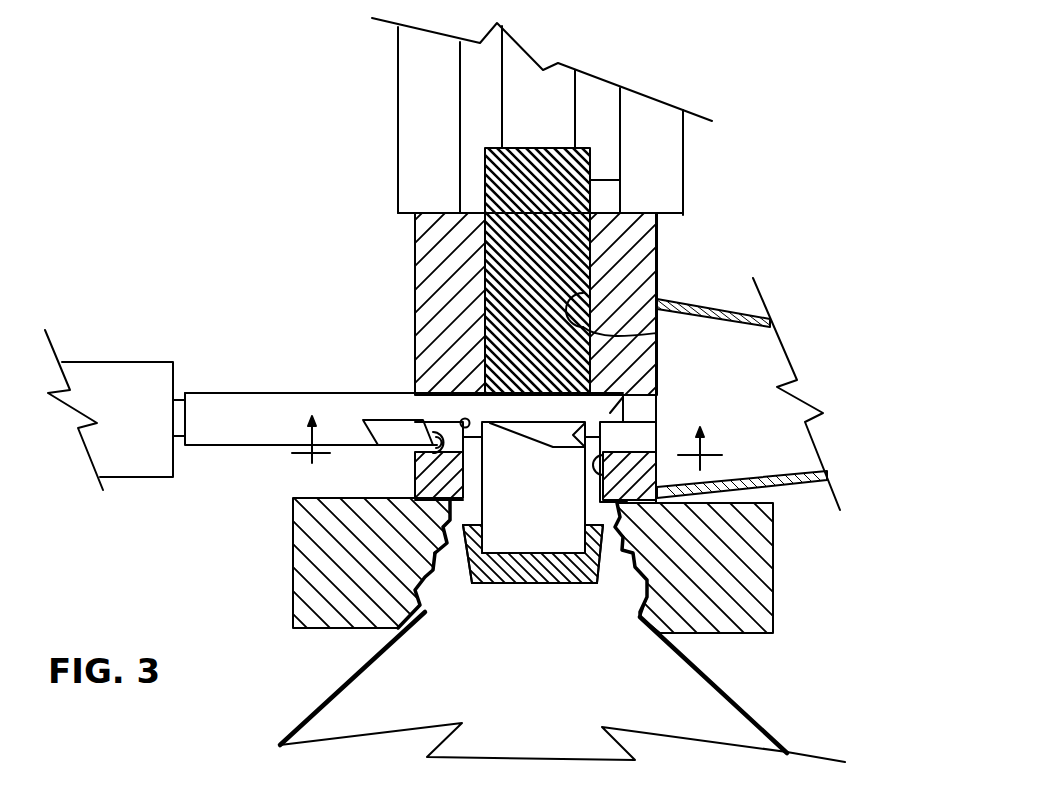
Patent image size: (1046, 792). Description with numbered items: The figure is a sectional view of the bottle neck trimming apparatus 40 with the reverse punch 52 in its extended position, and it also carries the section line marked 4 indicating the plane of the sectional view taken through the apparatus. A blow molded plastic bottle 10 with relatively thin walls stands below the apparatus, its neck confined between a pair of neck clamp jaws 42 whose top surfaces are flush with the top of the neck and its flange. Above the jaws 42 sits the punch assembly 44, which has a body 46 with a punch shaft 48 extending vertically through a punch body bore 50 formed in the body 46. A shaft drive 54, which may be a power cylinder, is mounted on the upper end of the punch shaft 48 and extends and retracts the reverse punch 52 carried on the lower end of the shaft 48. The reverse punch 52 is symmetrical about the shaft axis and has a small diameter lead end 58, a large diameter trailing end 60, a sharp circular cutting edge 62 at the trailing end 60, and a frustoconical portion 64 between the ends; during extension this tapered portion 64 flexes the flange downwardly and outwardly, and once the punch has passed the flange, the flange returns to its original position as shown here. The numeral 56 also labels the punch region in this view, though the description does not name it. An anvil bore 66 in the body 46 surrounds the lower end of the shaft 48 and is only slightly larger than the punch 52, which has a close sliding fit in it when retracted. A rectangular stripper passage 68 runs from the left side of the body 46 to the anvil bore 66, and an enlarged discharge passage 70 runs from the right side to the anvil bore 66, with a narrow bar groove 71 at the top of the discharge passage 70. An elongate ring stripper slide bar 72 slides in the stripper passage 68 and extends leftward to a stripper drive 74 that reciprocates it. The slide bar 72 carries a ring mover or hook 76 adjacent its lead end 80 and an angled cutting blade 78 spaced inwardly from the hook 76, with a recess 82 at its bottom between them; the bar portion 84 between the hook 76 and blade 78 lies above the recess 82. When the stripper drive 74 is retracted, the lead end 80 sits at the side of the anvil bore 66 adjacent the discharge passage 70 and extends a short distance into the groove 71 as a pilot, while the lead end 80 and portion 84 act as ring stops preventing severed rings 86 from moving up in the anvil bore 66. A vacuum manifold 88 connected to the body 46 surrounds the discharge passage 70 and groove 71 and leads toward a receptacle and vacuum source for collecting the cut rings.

The bottle 10 is at (297, 728).
The neck trimming apparatus 40 is at (181, 175).
The neck clamp jaws 42 is at (293, 580).
The punch assembly 44 is at (660, 253).
The body 46 is at (657, 288).
The punch shaft 48 is at (592, 180).
The punch body bore 50 is at (657, 333).
The reverse punch 52 is at (595, 585).
The shaft drive 54 is at (575, 120).
The sealing cup 56 is at (568, 535).
The lead end 58 is at (527, 583).
The trailing end 60 is at (448, 505).
The cutting edge 62 is at (440, 530).
The frustoconical portion 64 is at (463, 578).
The anvil bore 66 is at (827, 474).
The stripper passage 68 is at (418, 405).
The discharge passage 70 is at (640, 443).
The bar groove 71 is at (645, 410).
The ring stripper slide bar 72 is at (257, 393).
The stripper drive 74 is at (152, 362).
The hook 76 is at (553, 438).
The cutting blade 78 is at (413, 468).
The lead end 80 is at (623, 397).
The recess 82 is at (462, 418).
The bar portion 84 is at (447, 408).
The severed rings 86 is at (608, 432).
The vacuum manifold 88 is at (842, 512).
The section line 4- 4 is at (504, 449).